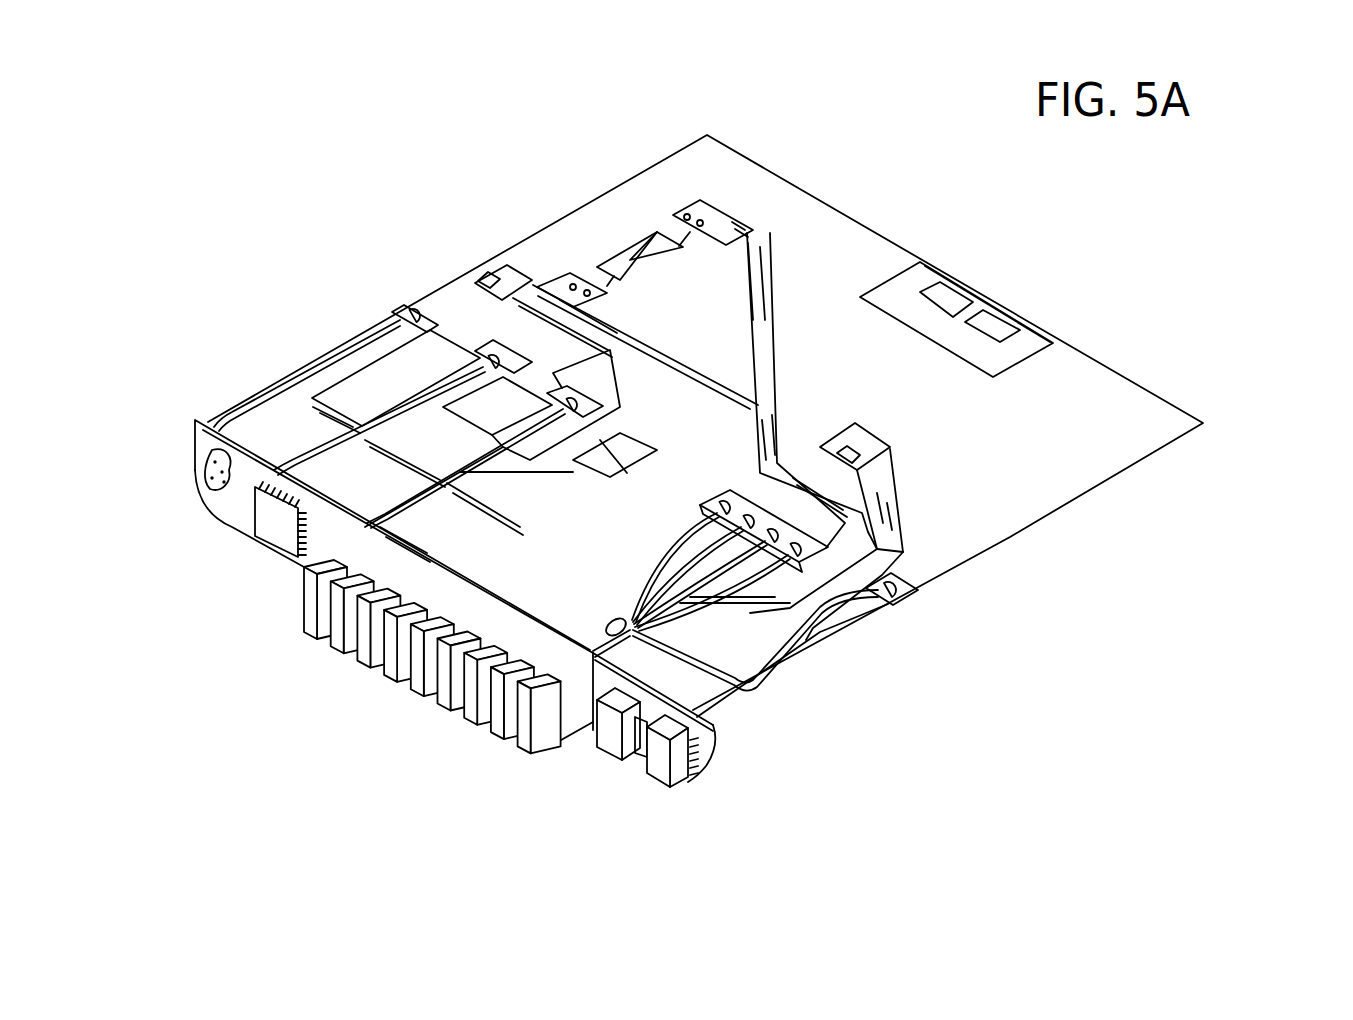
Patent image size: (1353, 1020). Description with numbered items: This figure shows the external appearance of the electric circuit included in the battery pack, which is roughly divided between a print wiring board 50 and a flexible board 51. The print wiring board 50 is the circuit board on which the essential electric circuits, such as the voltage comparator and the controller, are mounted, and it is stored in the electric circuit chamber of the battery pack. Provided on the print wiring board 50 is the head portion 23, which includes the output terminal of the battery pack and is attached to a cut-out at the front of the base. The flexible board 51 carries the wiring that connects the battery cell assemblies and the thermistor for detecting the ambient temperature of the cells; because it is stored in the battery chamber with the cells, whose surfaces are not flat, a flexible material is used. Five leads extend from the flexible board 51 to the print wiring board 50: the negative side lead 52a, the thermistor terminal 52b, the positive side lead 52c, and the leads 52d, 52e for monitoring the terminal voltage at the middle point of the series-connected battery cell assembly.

The print wiring board 50 is at (418, 720).
The flexible board 51 is at (1150, 496).
The head portion 23 is at (367, 663).
The negative side lead 52a is at (833, 640).
The terminal of a thermistor 52b is at (737, 678).
The positive side lead 52c is at (487, 453).
The lead for monitoring terminal voltage at the middle point 52d is at (457, 370).
The lead for monitoring terminal voltage at the middle point 52e is at (313, 367).